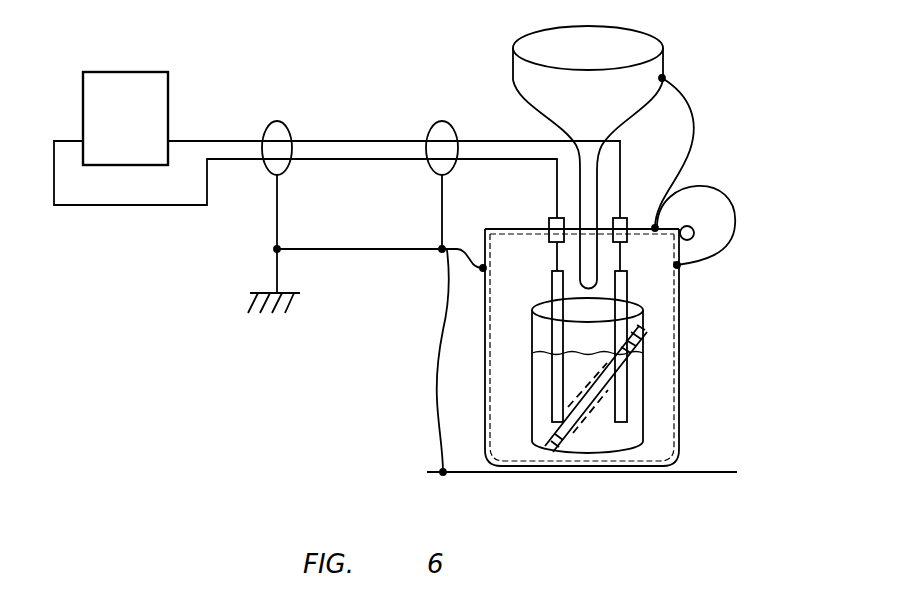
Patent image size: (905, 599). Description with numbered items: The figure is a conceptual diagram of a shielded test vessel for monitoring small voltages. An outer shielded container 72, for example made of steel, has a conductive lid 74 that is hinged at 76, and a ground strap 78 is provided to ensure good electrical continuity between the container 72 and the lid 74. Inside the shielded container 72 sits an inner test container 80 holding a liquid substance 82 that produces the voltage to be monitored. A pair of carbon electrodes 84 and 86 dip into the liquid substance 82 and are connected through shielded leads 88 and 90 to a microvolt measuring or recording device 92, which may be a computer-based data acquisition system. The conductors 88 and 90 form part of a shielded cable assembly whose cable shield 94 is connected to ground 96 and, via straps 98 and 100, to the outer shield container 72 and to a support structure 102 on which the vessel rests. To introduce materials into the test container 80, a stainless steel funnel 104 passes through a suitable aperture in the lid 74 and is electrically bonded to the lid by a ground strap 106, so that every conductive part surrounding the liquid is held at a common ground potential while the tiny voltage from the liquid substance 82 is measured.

The shielded container 72 is at (678, 397).
The conductive lid 74 is at (537, 229).
The hinge 76 is at (694, 236).
The ground strap 78 is at (725, 200).
The inner test container 80 is at (643, 367).
The liquid substance 82 is at (554, 445).
The carbon electrode 84 is at (552, 290).
The carbon electrode 86 is at (628, 290).
The shielded lead 88 is at (345, 159).
The shielded lead 90 is at (345, 141).
The microvolt measuring or recording device 92 is at (168, 95).
The cable shield 94 is at (279, 122).
The ground 96 is at (262, 292).
The strap 98 is at (462, 248).
The strap 100 is at (437, 393).
The support structure 102 is at (722, 472).
The stainless steel funnel 104 is at (663, 55).
The ground strap 106 is at (690, 127).